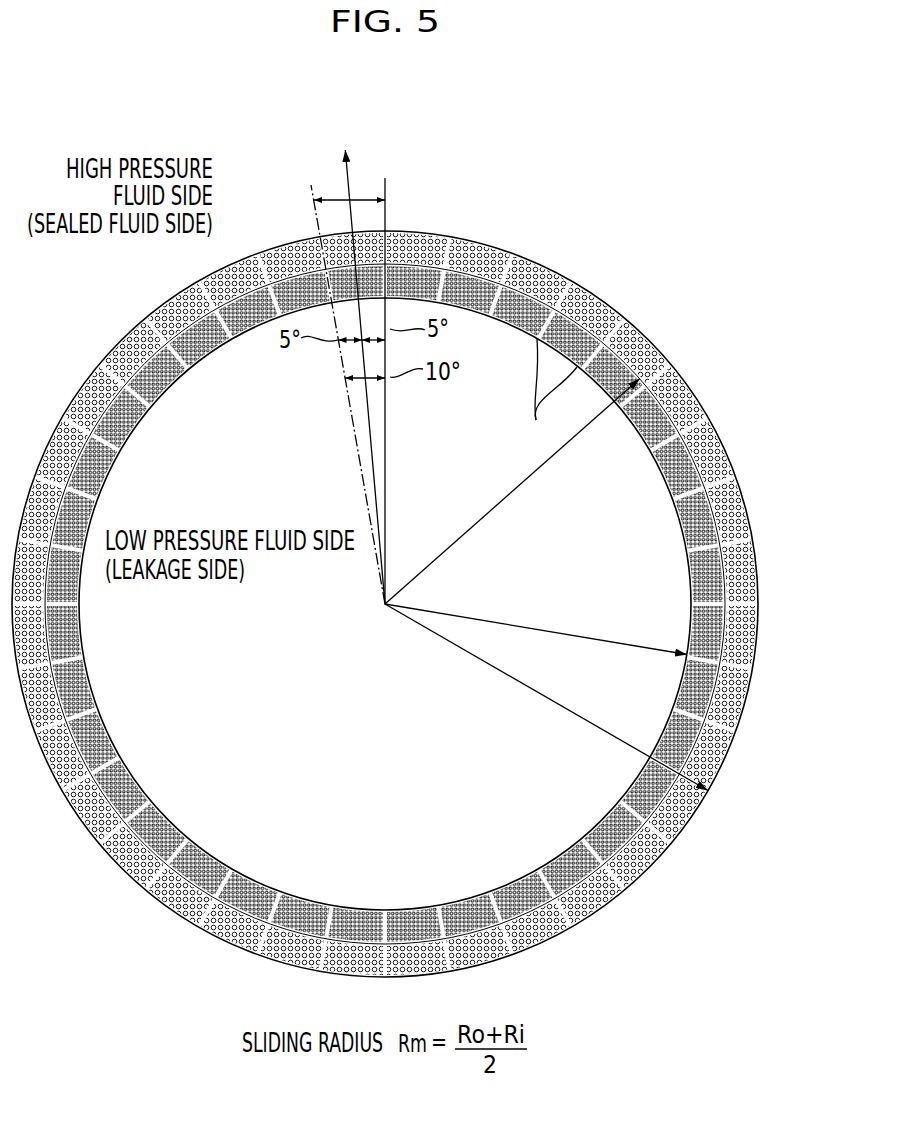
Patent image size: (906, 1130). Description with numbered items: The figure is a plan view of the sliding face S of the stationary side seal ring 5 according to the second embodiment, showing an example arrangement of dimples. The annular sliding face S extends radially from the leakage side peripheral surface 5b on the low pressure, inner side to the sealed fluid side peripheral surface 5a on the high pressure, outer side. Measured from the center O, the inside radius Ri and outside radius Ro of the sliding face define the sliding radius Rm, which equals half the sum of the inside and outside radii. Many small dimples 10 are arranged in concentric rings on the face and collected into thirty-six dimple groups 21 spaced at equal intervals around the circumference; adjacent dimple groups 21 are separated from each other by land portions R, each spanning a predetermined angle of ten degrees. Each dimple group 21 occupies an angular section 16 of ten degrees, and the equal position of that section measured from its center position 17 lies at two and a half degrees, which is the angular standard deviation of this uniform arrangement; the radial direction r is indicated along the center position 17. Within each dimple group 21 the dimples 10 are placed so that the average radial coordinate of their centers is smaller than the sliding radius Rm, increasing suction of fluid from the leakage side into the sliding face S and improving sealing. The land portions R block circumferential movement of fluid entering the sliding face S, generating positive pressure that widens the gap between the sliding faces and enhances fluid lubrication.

The stationary side seal ring 5 is at (411, 554).
The sealed fluid side peripheral surface 5a is at (731, 457).
The leakage side peripheral surface 5b is at (670, 486).
The dimple 10 is at (243, 331).
The section 16 is at (333, 202).
The center position 17 is at (352, 174).
The dimple group 21 is at (484, 240).
The sliding face S is at (541, 252).
The land portion R is at (551, 393).
The sliding radius Rm is at (512, 491).
The inside radius Ri is at (536, 627).
The outside radius Ro is at (546, 697).
The center O is at (374, 612).
The radial direction r is at (362, 364).